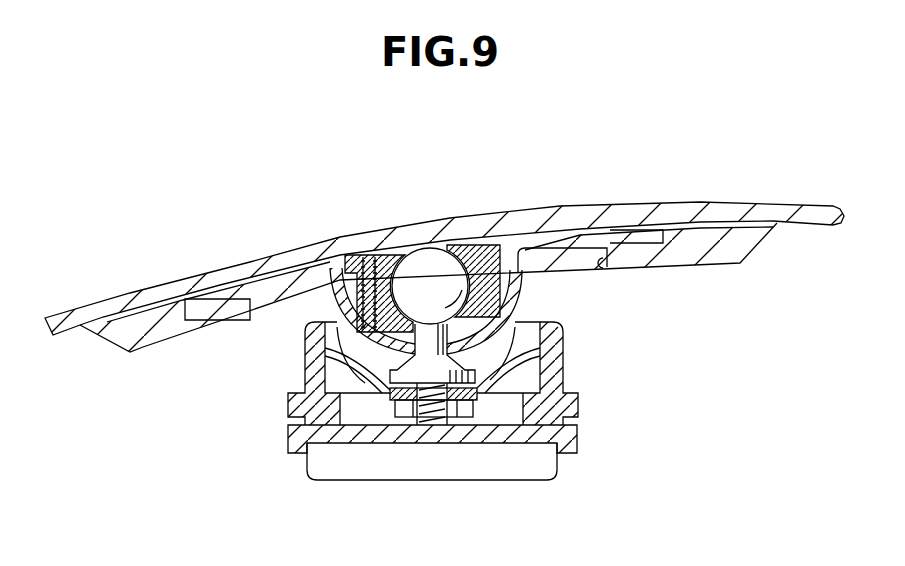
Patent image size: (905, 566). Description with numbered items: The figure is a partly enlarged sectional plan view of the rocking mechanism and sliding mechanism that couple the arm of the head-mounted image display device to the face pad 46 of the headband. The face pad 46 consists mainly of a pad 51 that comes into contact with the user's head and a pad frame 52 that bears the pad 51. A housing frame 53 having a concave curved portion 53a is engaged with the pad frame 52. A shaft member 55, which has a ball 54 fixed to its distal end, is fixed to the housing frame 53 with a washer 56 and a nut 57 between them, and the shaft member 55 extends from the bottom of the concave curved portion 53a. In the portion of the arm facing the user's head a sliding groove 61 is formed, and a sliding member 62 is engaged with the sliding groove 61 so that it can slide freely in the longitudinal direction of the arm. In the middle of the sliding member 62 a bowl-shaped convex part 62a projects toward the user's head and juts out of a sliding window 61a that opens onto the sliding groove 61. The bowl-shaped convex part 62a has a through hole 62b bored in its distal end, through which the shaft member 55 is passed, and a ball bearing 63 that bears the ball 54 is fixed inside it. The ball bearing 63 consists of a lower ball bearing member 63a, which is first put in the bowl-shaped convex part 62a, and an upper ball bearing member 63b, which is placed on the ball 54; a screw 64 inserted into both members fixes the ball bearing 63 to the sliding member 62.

The face pad 46 is at (588, 403).
The pad 51 is at (492, 467).
The pad frame 52 is at (573, 438).
The housing frame 53 is at (550, 365).
The concave curved portion 53a is at (545, 343).
The ball 54 is at (423, 258).
The shaft member 55 is at (423, 347).
The washer 56 is at (390, 396).
The nut 57 is at (405, 412).
The sliding groove 61 is at (720, 233).
The sliding window 61a is at (597, 268).
The sliding member 62 is at (632, 237).
The bowl-shaped convex part 62a is at (515, 285).
The through hole 62b is at (525, 316).
The ball bearing 63 is at (468, 213).
The lower ball bearing member 63a is at (520, 283).
The upper ball bearing member 63b is at (485, 247).
The screw 64 is at (362, 254).